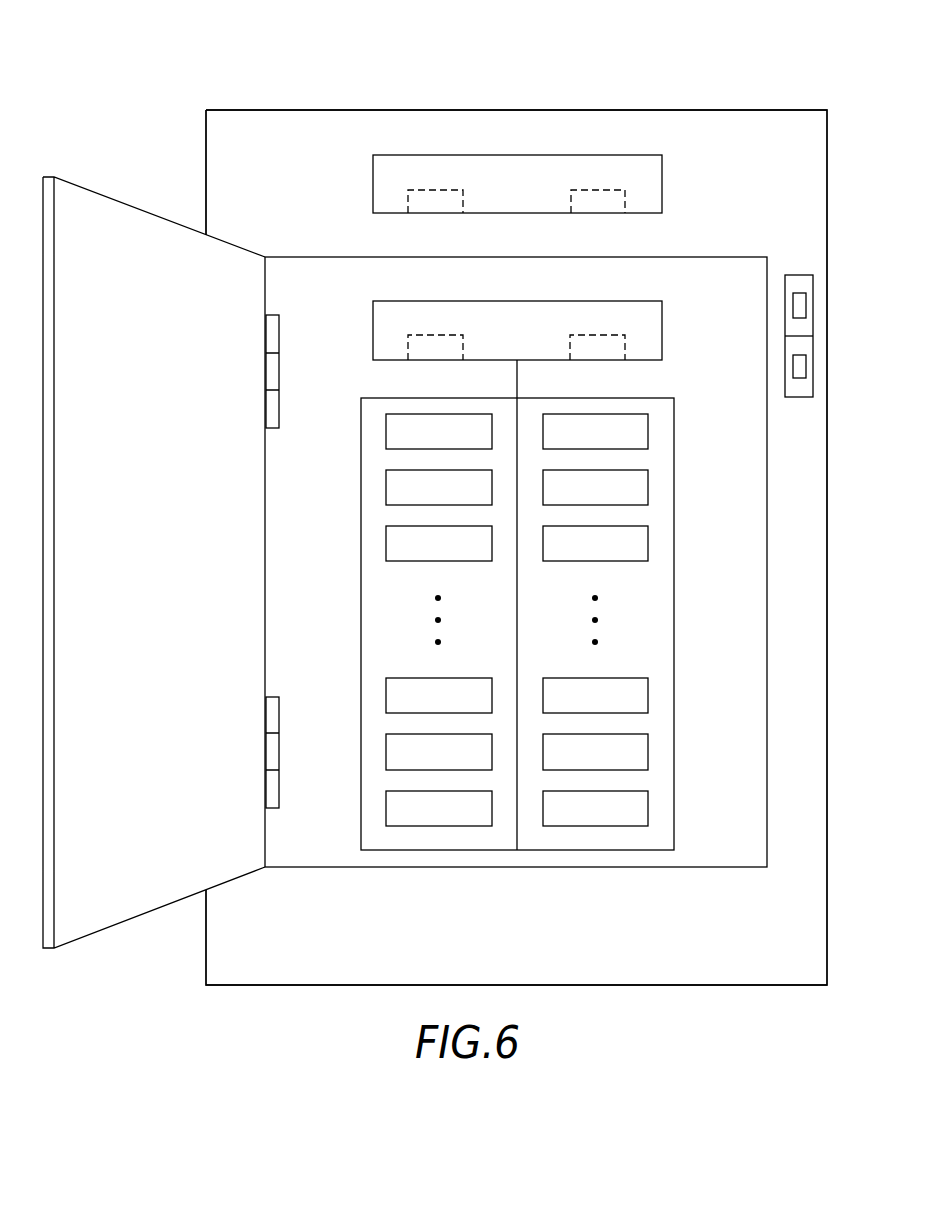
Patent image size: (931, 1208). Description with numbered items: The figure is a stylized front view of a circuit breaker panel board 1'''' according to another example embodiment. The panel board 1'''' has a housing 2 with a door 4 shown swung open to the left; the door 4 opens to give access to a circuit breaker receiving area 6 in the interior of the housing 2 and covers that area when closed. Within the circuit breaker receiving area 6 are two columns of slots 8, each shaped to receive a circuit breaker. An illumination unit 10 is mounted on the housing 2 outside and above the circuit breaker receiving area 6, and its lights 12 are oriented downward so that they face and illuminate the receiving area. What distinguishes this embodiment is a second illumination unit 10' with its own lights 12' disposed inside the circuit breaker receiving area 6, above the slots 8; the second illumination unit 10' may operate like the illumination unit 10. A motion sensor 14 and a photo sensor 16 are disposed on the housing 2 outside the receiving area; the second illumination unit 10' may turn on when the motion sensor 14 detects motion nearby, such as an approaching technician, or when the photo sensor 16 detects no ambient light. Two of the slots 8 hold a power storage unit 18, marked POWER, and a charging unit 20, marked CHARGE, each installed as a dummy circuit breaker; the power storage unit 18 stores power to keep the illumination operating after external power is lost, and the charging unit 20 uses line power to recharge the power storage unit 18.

The circuit breaker panel board 1'''' is at (516, 499).
The housing 2 is at (716, 985).
The door 4 is at (124, 205).
The circuit breaker receiving area 6 is at (319, 270).
The slots 8 is at (386, 430).
The illumination unit 10 is at (550, 176).
The lights 12 is at (516, 190).
The second illumination unit 10' is at (493, 329).
The lights 12' is at (516, 336).
The motion sensor 14 is at (793, 306).
The photo sensor 16 is at (793, 364).
The power storage unit 18 is at (386, 807).
The charging unit 20 is at (386, 751).